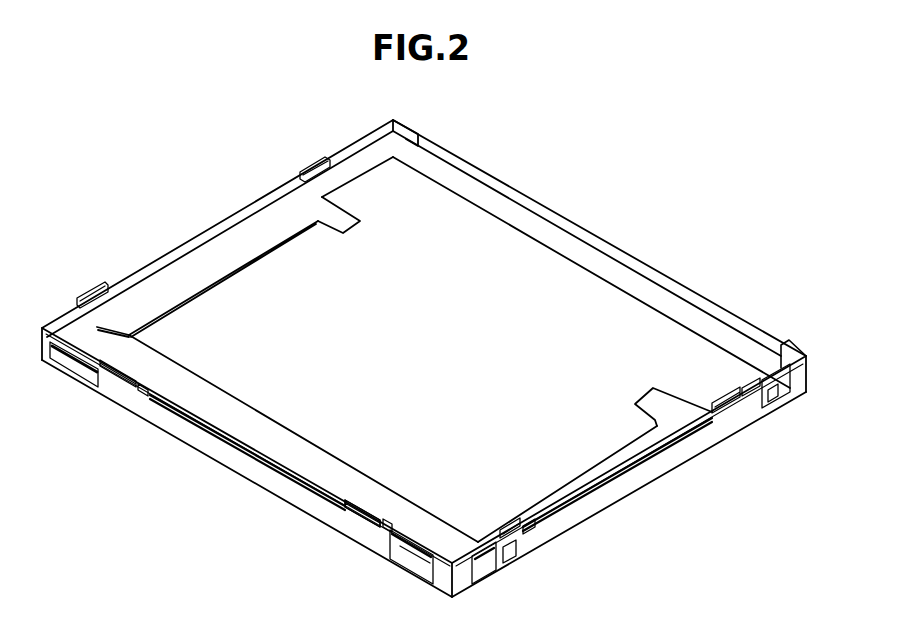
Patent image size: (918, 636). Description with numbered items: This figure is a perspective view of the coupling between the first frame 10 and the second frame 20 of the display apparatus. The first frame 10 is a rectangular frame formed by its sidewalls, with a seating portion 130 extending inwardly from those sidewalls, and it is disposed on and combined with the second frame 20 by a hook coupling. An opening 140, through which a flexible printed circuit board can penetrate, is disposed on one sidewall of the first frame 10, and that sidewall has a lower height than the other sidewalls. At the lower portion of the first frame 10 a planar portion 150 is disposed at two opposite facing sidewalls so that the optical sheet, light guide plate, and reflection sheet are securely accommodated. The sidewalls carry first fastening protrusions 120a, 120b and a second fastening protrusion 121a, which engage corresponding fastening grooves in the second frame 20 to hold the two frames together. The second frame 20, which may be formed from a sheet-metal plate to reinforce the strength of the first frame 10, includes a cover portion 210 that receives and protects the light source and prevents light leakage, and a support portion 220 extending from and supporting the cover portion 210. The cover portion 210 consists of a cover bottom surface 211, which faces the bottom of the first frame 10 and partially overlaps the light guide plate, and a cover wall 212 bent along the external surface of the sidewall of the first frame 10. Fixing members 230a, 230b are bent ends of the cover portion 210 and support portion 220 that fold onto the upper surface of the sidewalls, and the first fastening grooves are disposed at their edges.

The first frame 10 is at (527, 186).
The second frame 20 is at (248, 493).
The seating portion 130 is at (357, 165).
The opening 140 is at (751, 335).
The planar portion 150 is at (534, 502).
The first fastening protrusion 120a is at (360, 518).
The first fastening protrusion 120b is at (480, 542).
The second fastening protrusion 121a is at (517, 564).
The cover portion 210 is at (322, 563).
The cover bottom surface 211 is at (435, 545).
The cover wall 212 is at (390, 549).
The support portion 220 is at (567, 518).
The fixing member 230a is at (345, 507).
The fixing member 230b is at (523, 534).